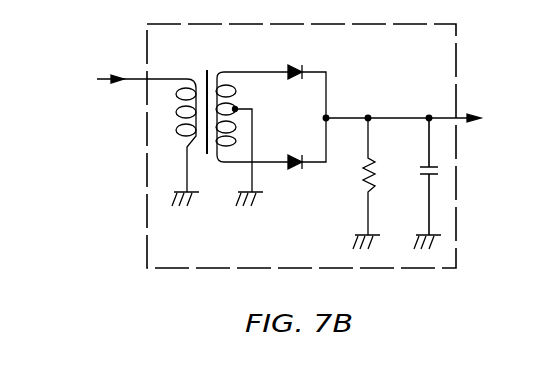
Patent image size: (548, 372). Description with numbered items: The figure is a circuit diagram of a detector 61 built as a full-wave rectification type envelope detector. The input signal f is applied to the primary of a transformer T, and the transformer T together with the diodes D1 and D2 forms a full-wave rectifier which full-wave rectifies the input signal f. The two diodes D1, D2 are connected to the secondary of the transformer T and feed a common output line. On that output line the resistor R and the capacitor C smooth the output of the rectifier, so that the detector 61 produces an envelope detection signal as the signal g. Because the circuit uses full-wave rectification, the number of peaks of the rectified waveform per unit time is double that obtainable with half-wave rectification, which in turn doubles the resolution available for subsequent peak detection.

The detector 61 is at (147, 170).
The transformer T is at (230, 118).
The input signal f is at (146, 71).
The signal g is at (402, 104).
The diode D1 is at (305, 91).
The diode D2 is at (305, 159).
The resistor R is at (362, 183).
The capacitor C is at (430, 183).